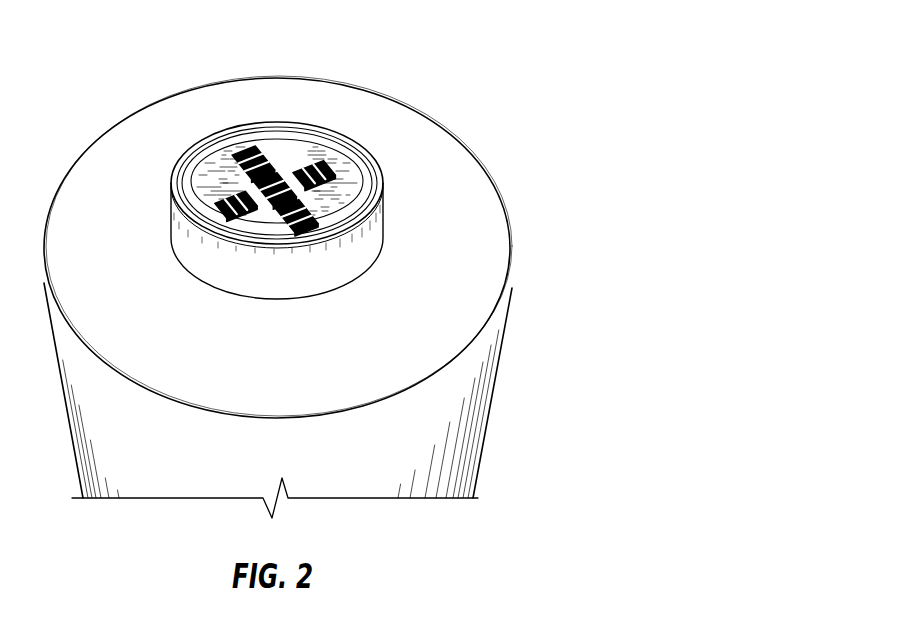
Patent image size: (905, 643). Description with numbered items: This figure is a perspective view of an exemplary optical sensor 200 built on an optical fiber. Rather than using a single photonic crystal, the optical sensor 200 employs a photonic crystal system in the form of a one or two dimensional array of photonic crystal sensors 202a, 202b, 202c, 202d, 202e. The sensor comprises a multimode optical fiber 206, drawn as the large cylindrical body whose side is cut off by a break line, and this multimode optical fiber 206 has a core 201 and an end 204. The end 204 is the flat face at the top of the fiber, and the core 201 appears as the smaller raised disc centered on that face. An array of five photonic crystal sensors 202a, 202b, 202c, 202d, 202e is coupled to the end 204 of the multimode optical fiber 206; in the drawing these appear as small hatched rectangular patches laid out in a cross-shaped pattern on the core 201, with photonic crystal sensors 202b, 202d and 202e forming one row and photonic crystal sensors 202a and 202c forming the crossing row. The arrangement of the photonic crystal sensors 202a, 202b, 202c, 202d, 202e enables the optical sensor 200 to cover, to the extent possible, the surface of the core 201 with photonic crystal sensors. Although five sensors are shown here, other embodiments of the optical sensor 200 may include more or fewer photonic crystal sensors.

The optical sensor 200 is at (305, 271).
The core 201 is at (221, 186).
The photonic crystal sensor 202a is at (215, 207).
The photonic crystal sensor 202b is at (288, 182).
The photonic crystal sensor 202c is at (332, 178).
The photonic crystal sensor 202d is at (287, 185).
The photonic crystal sensor 202e is at (283, 225).
The end 204 is at (350, 108).
The multimode optical fiber 206 is at (482, 415).